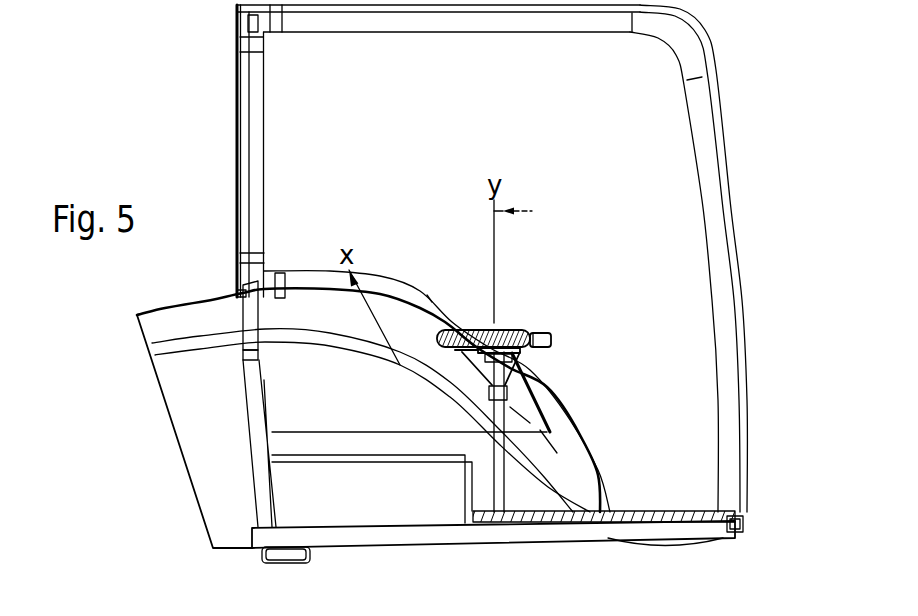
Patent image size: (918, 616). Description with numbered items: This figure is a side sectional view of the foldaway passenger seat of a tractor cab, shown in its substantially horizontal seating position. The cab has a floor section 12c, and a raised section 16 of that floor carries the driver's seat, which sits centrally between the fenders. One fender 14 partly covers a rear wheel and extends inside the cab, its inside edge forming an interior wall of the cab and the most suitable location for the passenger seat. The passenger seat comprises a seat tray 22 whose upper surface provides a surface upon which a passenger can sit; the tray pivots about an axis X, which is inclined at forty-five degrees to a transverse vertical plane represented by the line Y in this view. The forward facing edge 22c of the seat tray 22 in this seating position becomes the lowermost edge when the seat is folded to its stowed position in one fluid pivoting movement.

The fender 14 is at (143, 312).
The raised section of the cab floor 16 is at (400, 462).
The floor section 12c is at (680, 517).
The seat tray 22 is at (540, 329).
The forward facing edge of the seat tray 22c is at (551, 340).